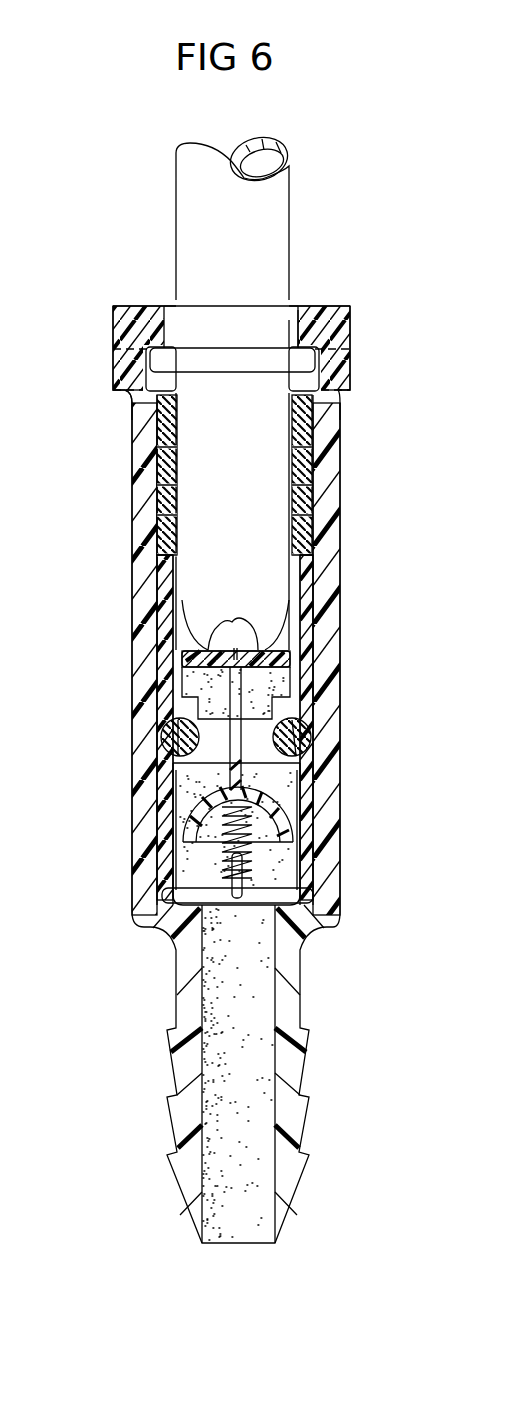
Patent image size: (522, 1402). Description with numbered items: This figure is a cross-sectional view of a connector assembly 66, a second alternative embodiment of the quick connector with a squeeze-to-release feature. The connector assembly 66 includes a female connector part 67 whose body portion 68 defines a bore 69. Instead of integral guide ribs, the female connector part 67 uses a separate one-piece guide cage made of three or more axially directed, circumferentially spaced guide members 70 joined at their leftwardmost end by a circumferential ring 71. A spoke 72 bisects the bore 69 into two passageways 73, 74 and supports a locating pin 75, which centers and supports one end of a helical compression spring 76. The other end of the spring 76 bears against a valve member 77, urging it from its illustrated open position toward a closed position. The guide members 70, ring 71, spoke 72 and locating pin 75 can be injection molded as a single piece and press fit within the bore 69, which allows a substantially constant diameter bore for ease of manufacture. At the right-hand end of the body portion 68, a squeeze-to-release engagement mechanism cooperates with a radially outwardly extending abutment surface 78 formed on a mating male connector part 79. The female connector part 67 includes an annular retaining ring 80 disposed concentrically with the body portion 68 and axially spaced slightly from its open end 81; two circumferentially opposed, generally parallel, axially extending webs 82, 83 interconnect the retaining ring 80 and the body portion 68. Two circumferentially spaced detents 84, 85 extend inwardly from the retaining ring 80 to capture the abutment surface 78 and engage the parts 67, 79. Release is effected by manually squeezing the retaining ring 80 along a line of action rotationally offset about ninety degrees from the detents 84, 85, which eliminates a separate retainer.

The connector assembly 66 is at (145, 958).
The female connector part 67 is at (120, 547).
The body portion 68 is at (140, 744).
The bore 69 is at (183, 858).
The guide members 70 is at (165, 798).
The circumferential ring 71 is at (318, 886).
The spoke 72 is at (255, 906).
The passageway 73 is at (163, 920).
The passageway 74 is at (288, 898).
The locating pin 75 is at (213, 905).
The helical compression spring 76 is at (300, 850).
The valve member 77 is at (310, 753).
The abutment surface 78 is at (243, 355).
The male connector part 79 is at (183, 138).
The retaining ring 80 is at (133, 324).
The open end 81 is at (300, 337).
The web 82 is at (338, 368).
The web 83 is at (130, 384).
The detent 84 is at (162, 328).
The detent 85 is at (293, 333).